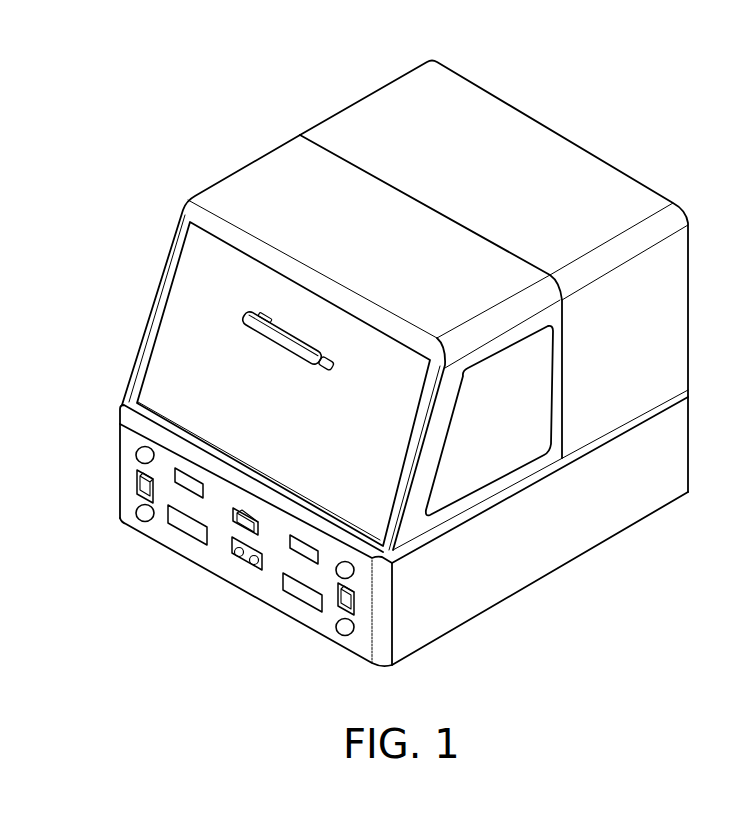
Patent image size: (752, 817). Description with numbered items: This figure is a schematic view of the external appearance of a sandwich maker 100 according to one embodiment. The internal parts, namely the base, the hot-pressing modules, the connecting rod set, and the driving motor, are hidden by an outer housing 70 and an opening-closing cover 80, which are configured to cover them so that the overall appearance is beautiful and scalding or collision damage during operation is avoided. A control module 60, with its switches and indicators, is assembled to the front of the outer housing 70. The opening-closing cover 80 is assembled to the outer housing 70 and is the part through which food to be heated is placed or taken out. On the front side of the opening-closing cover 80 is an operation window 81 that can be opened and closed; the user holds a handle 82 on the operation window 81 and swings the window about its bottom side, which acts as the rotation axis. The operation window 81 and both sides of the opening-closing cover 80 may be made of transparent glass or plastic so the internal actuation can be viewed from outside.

The sandwich maker 100 is at (84, 73).
The control module 60 is at (129, 438).
The outer housing 70 is at (358, 114).
The opening-closing cover 80 is at (257, 173).
The operation window 81 is at (175, 347).
The handle 82 is at (244, 319).